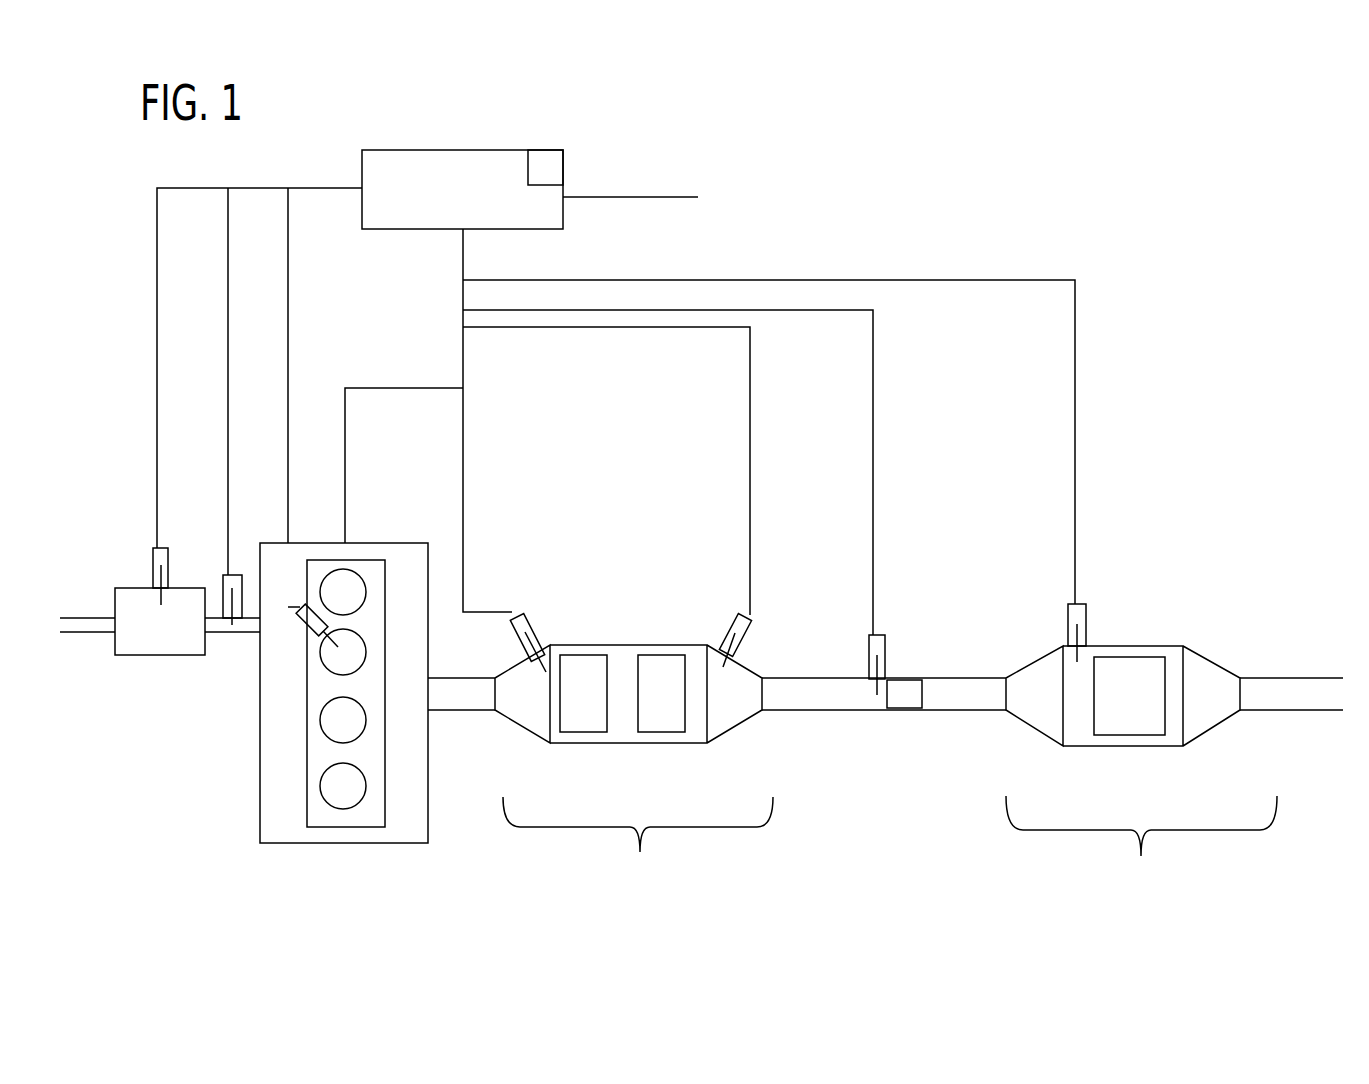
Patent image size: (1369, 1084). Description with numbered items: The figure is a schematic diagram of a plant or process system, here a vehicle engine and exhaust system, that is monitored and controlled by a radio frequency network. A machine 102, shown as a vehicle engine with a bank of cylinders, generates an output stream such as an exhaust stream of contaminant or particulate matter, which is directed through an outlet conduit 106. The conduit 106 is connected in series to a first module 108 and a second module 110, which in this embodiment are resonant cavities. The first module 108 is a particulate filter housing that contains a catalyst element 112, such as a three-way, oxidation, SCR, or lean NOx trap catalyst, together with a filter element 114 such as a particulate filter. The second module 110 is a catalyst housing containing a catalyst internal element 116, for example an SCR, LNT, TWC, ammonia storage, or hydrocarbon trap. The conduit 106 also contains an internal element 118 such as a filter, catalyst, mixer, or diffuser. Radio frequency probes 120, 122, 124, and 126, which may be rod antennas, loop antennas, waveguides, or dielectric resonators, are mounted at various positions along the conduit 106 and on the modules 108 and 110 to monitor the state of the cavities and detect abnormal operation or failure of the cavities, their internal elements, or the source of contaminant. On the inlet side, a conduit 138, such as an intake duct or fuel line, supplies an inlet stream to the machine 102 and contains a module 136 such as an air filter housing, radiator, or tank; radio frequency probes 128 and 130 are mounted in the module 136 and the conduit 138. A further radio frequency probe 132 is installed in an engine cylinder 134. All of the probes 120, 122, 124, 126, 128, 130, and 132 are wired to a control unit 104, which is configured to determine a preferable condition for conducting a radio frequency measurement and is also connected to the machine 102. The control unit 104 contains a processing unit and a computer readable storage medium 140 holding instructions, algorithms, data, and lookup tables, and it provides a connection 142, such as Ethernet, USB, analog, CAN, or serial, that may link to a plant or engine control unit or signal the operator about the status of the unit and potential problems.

The machine 102 is at (350, 856).
The control unit 104 is at (487, 142).
The conduit 106 is at (468, 722).
The first module 108 is at (634, 772).
The second module 110 is at (1141, 770).
The catalyst element 112 is at (583, 702).
The filter element 114 is at (673, 702).
The catalyst internal element 116 is at (1130, 699).
The internal element 118 is at (909, 695).
The radio frequency probe 120 is at (1088, 587).
The radio frequency probe 122 is at (865, 618).
The radio frequency probe 124 is at (718, 620).
The radio frequency probe 126 is at (542, 618).
The radio frequency probe 128 is at (147, 568).
The radio frequency probe 130 is at (240, 560).
The radio frequency probe 132 is at (300, 633).
The engine cylinder 134 is at (327, 675).
The module 136 is at (160, 622).
The conduit 138 is at (237, 642).
The computer readable storage medium 140 is at (543, 173).
The connection 142 is at (630, 217).